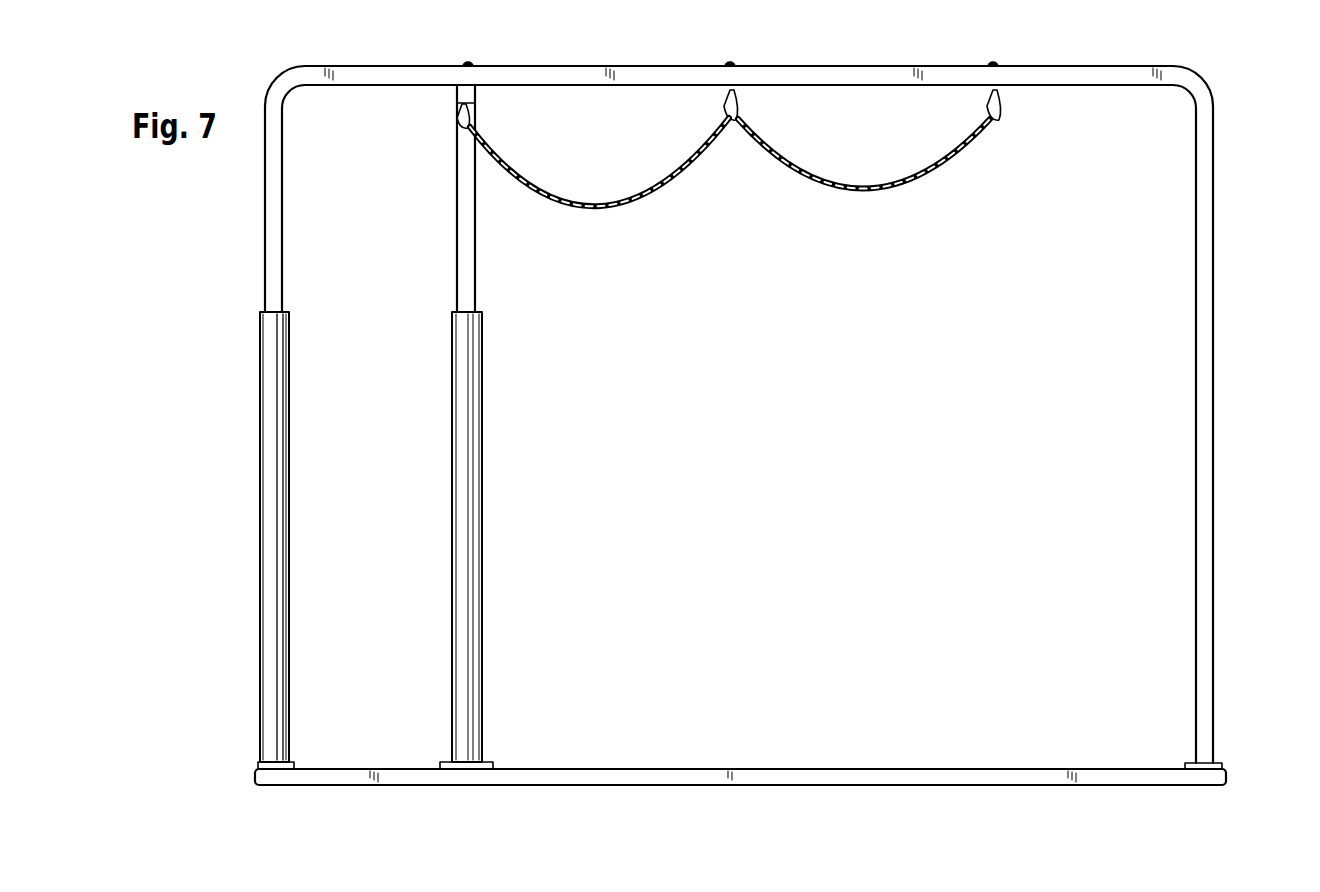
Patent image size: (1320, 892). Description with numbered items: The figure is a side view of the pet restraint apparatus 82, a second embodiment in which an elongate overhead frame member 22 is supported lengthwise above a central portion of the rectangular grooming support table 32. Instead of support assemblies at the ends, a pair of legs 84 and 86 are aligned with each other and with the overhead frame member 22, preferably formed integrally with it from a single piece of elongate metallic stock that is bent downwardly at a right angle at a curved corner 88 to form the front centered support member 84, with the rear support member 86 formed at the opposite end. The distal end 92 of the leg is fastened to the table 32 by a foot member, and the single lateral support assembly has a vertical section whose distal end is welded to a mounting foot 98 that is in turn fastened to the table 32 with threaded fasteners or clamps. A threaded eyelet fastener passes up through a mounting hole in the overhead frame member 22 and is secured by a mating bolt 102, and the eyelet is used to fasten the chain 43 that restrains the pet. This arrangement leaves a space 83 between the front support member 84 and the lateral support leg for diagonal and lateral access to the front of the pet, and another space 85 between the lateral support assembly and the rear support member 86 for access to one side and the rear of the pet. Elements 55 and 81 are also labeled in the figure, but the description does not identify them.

The overhead frame member 22 is at (845, 72).
The curved corner 88 is at (279, 79).
The space 85 is at (268, 287).
The leg 86 is at (1212, 356).
The pet restraint apparatus 82 is at (485, 388).
The leg 84 is at (259, 372).
The sleeve channel 55 is at (280, 543).
The mounting foot 98 is at (493, 766).
The left foot 81 is at (296, 767).
The distal end of leg 92 is at (1215, 763).
The grooming support table 32 is at (773, 776).
The mating bolt 102 is at (475, 64).
The chain 43 is at (638, 196).
The space 83 is at (357, 206).